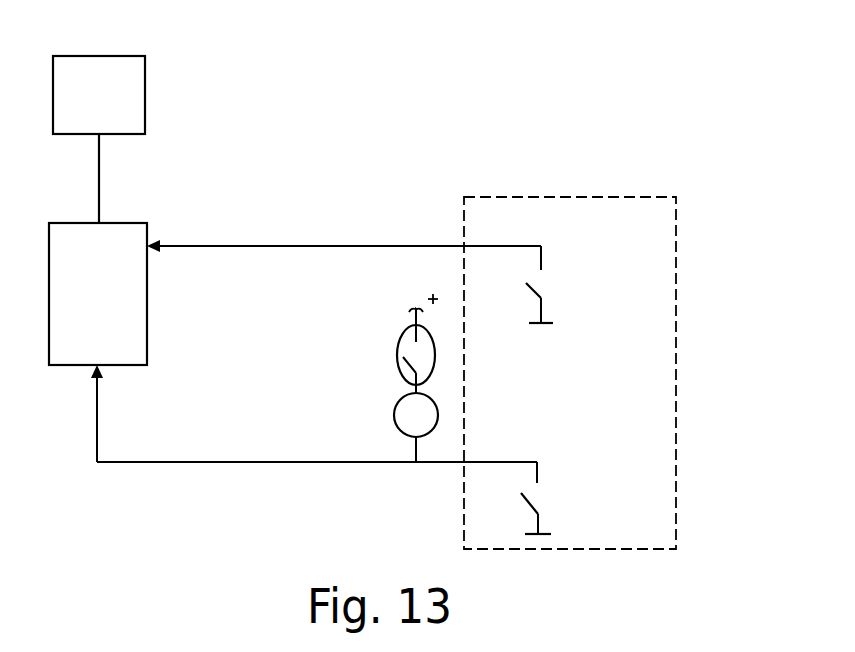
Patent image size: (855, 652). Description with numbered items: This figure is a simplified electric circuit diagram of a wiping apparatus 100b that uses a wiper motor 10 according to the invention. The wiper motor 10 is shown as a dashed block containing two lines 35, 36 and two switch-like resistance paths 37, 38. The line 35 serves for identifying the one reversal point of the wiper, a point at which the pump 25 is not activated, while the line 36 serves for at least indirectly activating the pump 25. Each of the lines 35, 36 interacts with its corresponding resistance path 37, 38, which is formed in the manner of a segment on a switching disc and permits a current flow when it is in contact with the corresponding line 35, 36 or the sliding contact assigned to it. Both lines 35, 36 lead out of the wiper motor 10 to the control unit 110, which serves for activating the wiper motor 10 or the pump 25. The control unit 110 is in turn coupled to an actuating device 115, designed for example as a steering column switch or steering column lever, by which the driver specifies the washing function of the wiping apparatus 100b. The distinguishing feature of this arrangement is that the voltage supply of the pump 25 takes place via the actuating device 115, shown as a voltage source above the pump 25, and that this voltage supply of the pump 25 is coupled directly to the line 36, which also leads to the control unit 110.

The wiper motor 10 is at (688, 355).
The pump 25 is at (393, 413).
The line 35 is at (505, 246).
The line 36 is at (500, 462).
The resistance path 37 is at (543, 305).
The resistance path 38 is at (540, 513).
The wiping apparatus 100b is at (240, 492).
The control unit 110 is at (115, 222).
The actuating device 115 is at (145, 93).